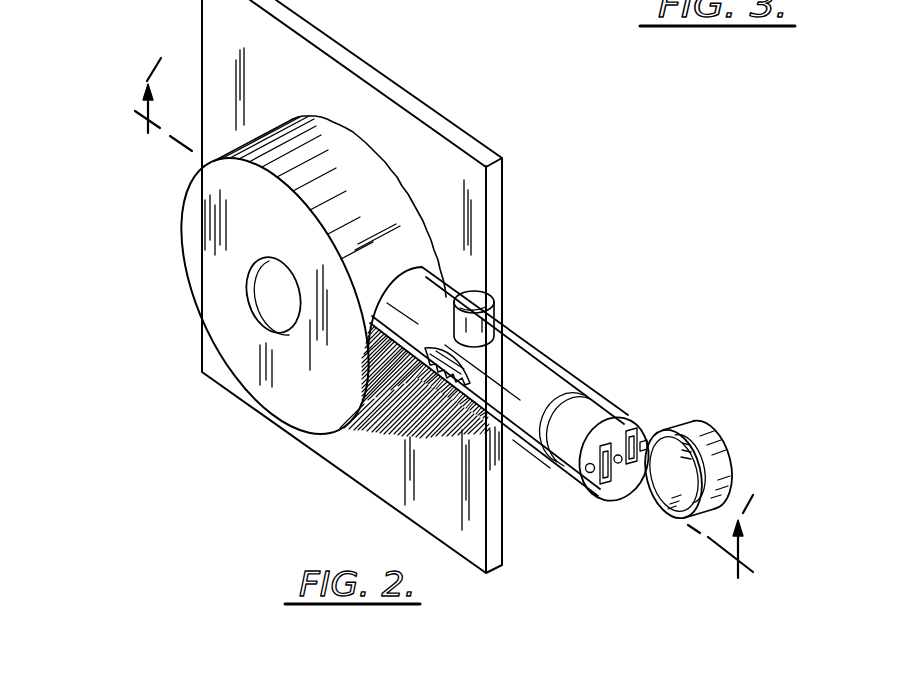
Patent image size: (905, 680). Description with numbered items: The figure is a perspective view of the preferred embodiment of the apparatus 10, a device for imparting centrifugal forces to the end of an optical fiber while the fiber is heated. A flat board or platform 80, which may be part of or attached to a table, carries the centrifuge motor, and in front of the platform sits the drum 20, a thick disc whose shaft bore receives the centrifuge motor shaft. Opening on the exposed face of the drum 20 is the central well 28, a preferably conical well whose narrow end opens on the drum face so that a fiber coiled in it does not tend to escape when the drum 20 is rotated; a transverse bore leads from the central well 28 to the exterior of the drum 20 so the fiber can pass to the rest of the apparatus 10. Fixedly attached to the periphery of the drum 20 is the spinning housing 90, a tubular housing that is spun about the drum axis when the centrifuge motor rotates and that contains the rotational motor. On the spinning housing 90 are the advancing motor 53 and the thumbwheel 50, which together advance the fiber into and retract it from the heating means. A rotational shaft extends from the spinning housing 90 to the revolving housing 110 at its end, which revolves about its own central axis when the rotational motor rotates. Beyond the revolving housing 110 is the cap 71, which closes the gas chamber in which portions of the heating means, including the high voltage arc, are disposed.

The apparatus 10 is at (162, 221).
The drum 20 is at (212, 309).
The central well 28 is at (278, 278).
The thumbwheel 50 is at (450, 366).
The advancing motor 53 is at (492, 300).
The cap 71 is at (713, 452).
The board or platform 80 is at (237, 22).
The spinning housing 90 is at (547, 378).
The revolving housing 110 is at (627, 413).